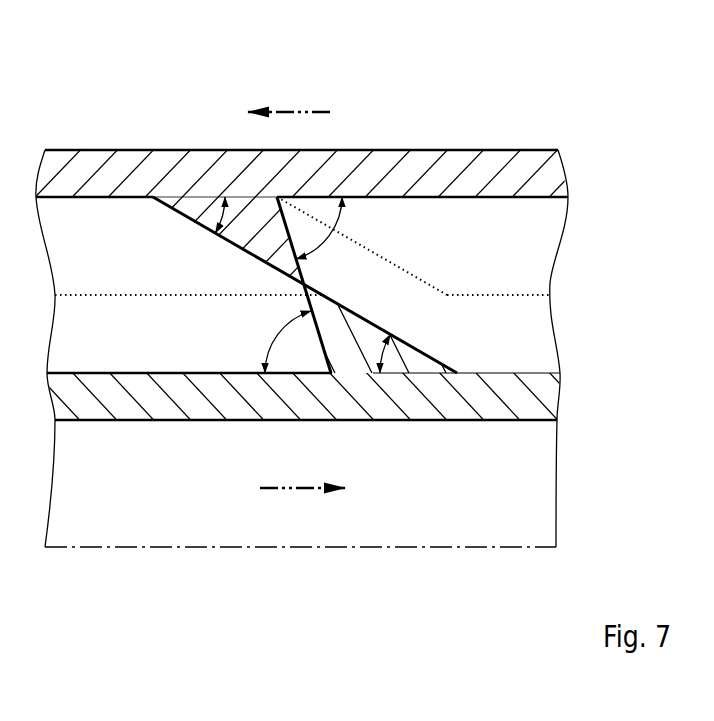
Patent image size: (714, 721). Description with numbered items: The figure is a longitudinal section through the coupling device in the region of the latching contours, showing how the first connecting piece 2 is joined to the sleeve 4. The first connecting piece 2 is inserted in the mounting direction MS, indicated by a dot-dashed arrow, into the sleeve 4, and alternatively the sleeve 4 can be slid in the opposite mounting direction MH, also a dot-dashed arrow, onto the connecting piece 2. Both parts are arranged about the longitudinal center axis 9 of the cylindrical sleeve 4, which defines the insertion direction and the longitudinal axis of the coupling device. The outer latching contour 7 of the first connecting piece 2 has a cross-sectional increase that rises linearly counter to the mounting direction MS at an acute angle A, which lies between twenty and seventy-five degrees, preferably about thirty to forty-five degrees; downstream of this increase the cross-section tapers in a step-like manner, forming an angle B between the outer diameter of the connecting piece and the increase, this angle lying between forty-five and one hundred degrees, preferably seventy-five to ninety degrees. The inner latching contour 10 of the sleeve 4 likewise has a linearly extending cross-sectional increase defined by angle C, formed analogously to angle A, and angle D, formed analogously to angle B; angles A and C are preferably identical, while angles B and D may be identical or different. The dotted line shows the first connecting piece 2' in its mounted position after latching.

The sleeve 4 is at (134, 146).
The first connecting piece 2 is at (301, 395).
The outer latching contour 7 is at (342, 330).
The inner latching contour 10 is at (258, 258).
The first connecting piece in mounted position 2' is at (348, 246).
The longitudinal center axis 9 is at (242, 547).
The angle A is at (386, 356).
The angle B is at (277, 336).
The angle C is at (225, 217).
The angle D is at (332, 237).
The mounting direction of the sleeve MH is at (292, 112).
The mounting direction of the first connecting piece MS is at (298, 492).